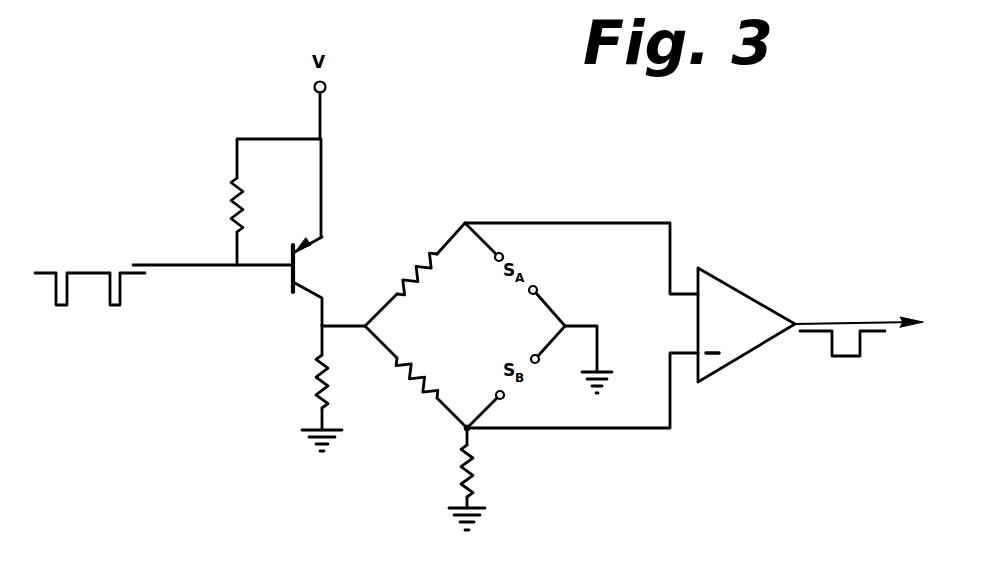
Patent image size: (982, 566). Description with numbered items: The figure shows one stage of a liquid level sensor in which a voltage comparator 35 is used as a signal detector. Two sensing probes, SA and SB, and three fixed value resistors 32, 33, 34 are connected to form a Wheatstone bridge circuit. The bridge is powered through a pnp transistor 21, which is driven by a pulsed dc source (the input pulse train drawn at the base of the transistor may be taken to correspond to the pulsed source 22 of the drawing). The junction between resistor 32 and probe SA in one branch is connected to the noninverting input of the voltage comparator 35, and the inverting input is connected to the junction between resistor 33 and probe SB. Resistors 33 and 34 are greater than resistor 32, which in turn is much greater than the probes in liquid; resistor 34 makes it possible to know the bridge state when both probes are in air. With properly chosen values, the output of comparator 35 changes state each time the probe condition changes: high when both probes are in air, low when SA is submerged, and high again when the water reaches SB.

The pnp transistor 21 is at (300, 262).
The input pulse signal 22 is at (58, 306).
The fixed value resistor 32 is at (416, 263).
The fixed value resistor 33 is at (421, 386).
The fixed value resistor 34 is at (473, 467).
The voltage comparator 35 is at (752, 298).